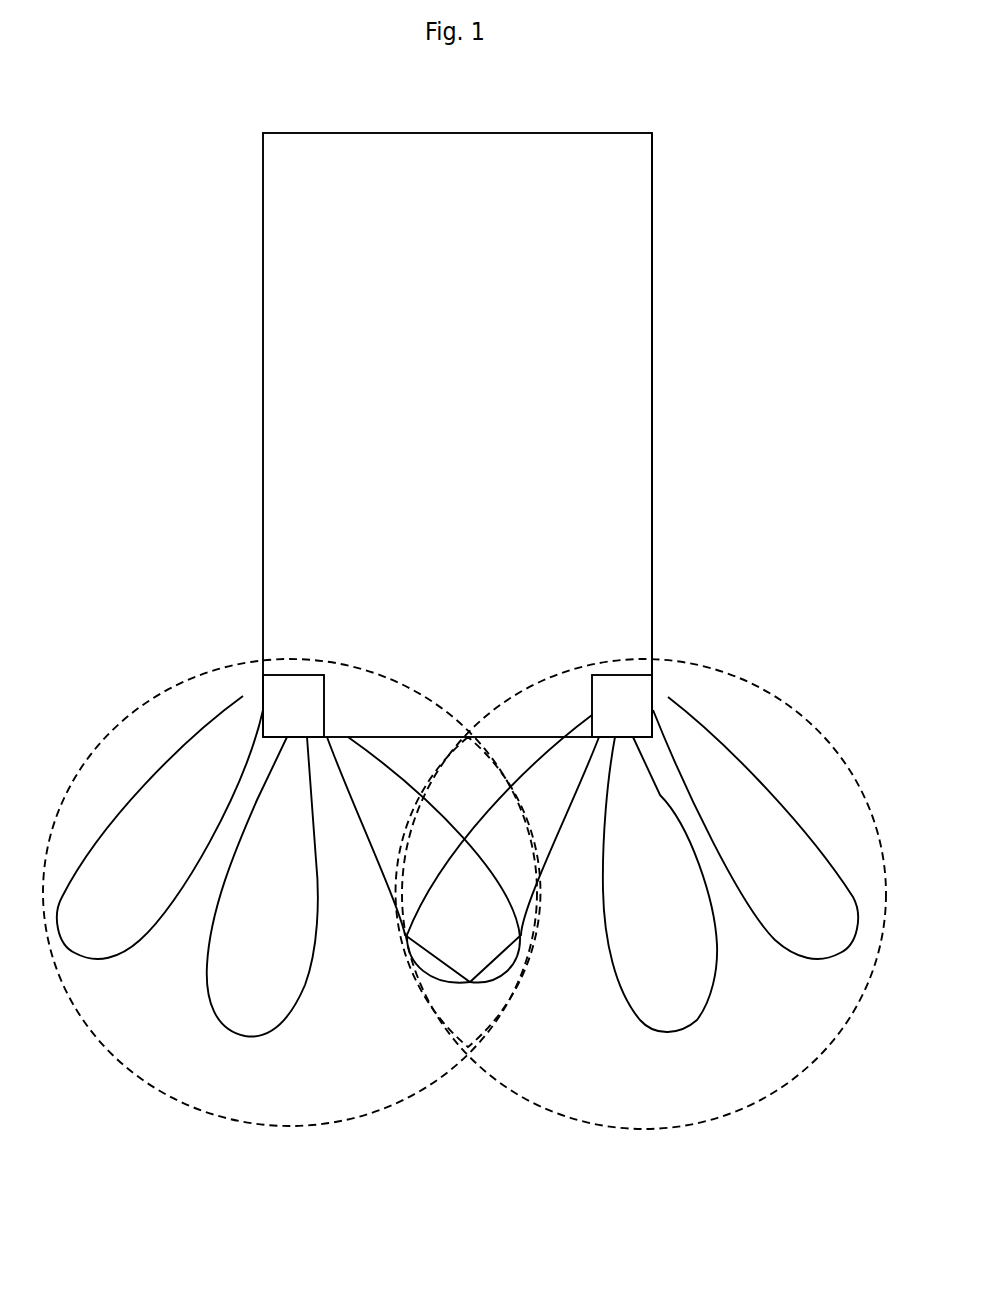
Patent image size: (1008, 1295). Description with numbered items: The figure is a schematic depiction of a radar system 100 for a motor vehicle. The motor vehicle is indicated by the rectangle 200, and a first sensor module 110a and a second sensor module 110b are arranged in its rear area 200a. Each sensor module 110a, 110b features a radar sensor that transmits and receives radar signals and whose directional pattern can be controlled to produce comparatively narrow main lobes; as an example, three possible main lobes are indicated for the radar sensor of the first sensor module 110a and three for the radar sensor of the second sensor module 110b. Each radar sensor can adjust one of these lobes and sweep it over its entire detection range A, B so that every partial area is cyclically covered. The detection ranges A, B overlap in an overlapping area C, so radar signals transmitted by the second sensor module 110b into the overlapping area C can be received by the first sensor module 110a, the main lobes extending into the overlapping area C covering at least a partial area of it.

The rectangle 200 is at (263, 318).
The rear area 200a is at (673, 451).
The radar system 100 is at (457, 513).
The first sensor module 110a is at (276, 675).
The second sensor module 110b is at (637, 675).
The detection range A is at (140, 710).
The detection range B is at (792, 712).
The overlapping area C is at (469, 1036).